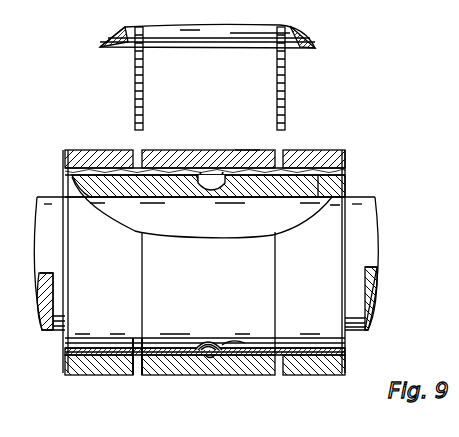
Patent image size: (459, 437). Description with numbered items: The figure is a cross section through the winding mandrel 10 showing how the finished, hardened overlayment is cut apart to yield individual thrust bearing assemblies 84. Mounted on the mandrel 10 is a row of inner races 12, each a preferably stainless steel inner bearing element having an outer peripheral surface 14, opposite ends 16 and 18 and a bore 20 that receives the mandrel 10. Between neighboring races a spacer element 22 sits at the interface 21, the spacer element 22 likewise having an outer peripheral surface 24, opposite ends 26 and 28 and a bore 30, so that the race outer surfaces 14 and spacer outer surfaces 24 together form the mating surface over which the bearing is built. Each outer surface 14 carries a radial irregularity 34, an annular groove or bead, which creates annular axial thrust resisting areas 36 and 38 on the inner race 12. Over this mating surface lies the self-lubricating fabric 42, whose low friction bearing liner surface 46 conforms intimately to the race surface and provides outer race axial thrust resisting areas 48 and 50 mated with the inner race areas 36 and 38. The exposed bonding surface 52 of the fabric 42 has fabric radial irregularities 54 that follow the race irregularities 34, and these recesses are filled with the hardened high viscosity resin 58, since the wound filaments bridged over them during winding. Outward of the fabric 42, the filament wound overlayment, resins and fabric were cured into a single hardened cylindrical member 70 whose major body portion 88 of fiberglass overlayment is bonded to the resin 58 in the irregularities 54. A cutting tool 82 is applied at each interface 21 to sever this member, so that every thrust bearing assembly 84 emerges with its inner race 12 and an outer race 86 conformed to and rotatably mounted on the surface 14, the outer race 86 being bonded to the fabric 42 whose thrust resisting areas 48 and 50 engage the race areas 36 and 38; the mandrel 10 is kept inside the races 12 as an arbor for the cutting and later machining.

The mandrel 10 is at (48, 197).
The inner race 12 is at (140, 375).
The outer peripheral surface 14 is at (190, 172).
The end 16 is at (110, 375).
The end 18 is at (277, 268).
The bore 20 is at (176, 197).
The interface 21 is at (320, 375).
The spacer element 22 is at (75, 340).
The outer peripheral surface 24 is at (92, 150).
The end 26 is at (275, 252).
The end 28 is at (142, 270).
The bore 30 is at (118, 208).
The radial irregularity 34 is at (235, 148).
The axial thrust resisting area 36 is at (205, 352).
The axial thrust resisting area 38 is at (218, 355).
The fabric 42 is at (345, 170).
The bearing liner surface 46 is at (345, 186).
The outer race axial thrust resisting area 48 is at (203, 338).
The outer race axial thrust resisting area 50 is at (228, 342).
The bonding surface 52 is at (307, 218).
The fabric radial irregularity 54 is at (218, 168).
The high viscosity resin 58 is at (201, 178).
The cylindrical member 70 is at (345, 152).
The cutting tool 82 is at (135, 60).
The thrust bearing assembly 84 is at (178, 125).
The outer race 86 is at (152, 150).
The major body portion 88 is at (275, 148).